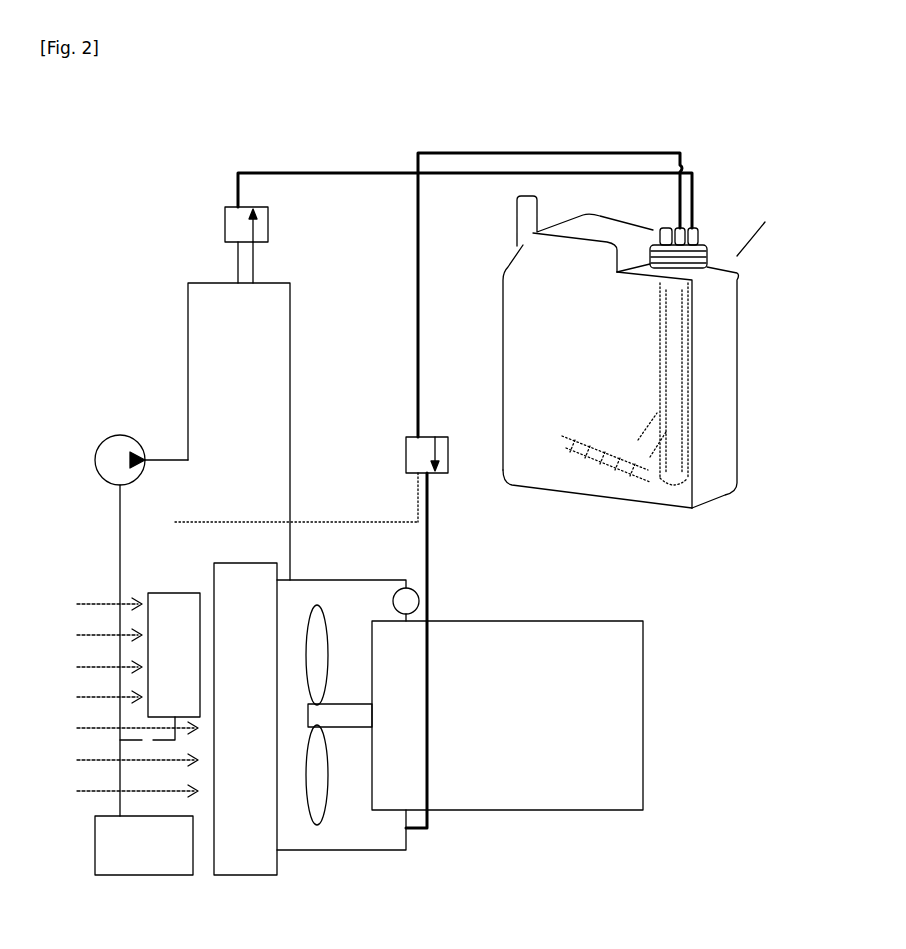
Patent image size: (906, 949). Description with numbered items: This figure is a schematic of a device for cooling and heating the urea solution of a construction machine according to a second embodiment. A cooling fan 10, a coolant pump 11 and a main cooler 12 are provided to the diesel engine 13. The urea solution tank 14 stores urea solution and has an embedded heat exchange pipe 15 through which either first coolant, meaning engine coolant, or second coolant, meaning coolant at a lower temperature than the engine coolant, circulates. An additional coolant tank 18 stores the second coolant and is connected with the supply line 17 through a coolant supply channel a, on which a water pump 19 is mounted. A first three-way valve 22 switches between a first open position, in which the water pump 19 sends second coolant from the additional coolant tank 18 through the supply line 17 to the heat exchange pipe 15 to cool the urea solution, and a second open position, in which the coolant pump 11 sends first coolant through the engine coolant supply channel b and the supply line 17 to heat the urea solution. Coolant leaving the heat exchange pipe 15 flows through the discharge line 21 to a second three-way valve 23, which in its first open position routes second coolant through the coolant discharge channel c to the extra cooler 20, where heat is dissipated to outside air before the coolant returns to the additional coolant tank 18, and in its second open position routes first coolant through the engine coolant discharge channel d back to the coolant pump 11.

The cooling fan 10 is at (320, 800).
The coolant pump 11 is at (420, 590).
The main cooler 12 is at (243, 879).
The diesel engine 13 is at (625, 720).
The urea solution tank 14 is at (737, 256).
The heat exchange pipe 15 is at (658, 500).
The supply line 17 is at (345, 172).
The additional coolant tank 18 is at (135, 879).
The water pump 19 is at (118, 436).
The extra cooler 20 is at (147, 592).
The discharge line 21 is at (578, 152).
The first 3-way valve 22 is at (224, 214).
The second 3-way valve 23 is at (443, 478).
The coolant supply channel a is at (119, 522).
The engine coolant supply channel b is at (291, 418).
The coolant discharge channel c is at (238, 522).
The engine coolant discharge channel d is at (430, 566).